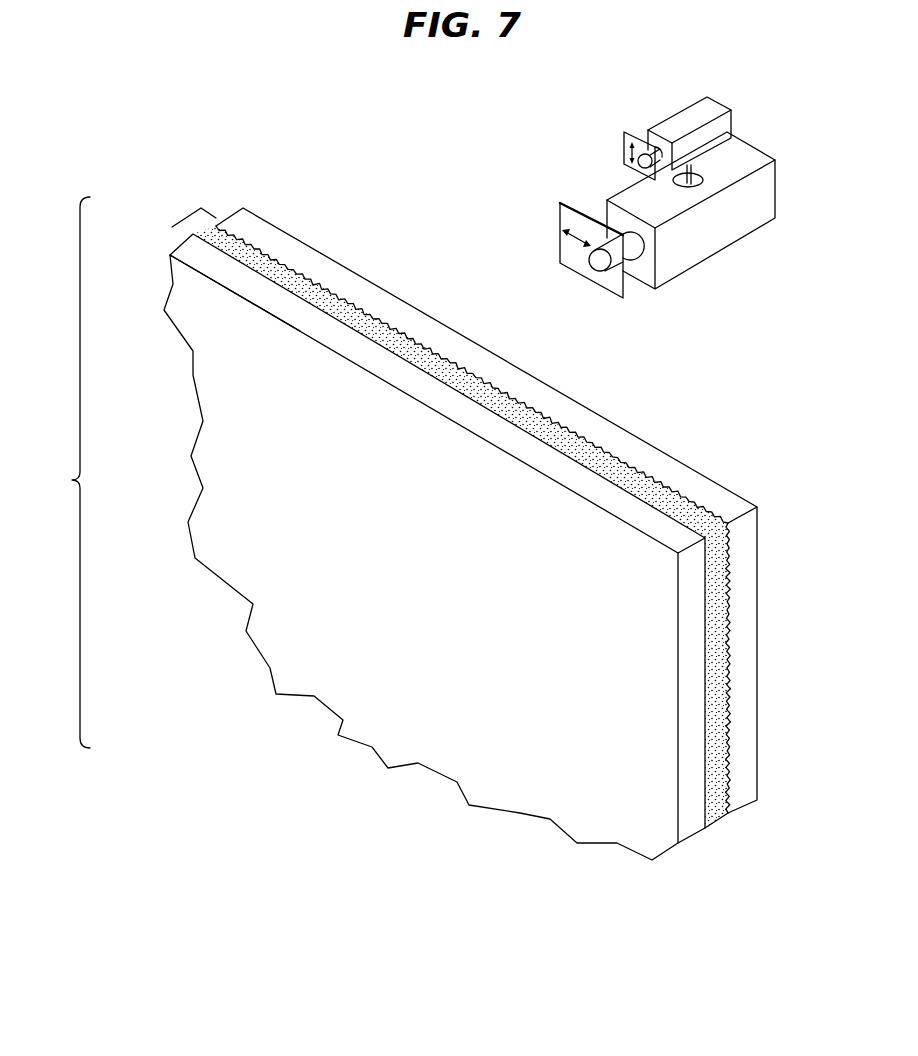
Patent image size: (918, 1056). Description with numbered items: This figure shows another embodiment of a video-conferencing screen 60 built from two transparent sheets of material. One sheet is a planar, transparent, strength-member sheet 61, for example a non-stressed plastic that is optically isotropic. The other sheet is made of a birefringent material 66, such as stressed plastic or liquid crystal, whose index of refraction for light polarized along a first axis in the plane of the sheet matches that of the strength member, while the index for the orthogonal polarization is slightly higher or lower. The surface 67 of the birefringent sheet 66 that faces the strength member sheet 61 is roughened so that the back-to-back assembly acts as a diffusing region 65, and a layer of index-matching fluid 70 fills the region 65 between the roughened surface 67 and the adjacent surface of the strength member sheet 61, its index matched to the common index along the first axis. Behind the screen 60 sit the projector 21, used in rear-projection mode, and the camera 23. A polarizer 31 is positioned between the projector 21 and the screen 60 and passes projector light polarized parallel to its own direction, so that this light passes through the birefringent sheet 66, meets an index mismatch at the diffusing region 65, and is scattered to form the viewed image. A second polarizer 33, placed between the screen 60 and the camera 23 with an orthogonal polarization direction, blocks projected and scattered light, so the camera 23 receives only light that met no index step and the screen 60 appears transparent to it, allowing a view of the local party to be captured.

The screen 60 is at (51, 496).
The strength-member sheet 61 is at (193, 253).
The diffusing region 65 is at (186, 218).
The birefringent sheet 66 is at (733, 505).
The roughened surface 67 is at (730, 558).
The index-matching fluid 70 is at (718, 668).
The projector 21 is at (738, 240).
The camera 23 is at (718, 100).
The polarizer 31 is at (560, 205).
The polarizer 33 is at (624, 138).